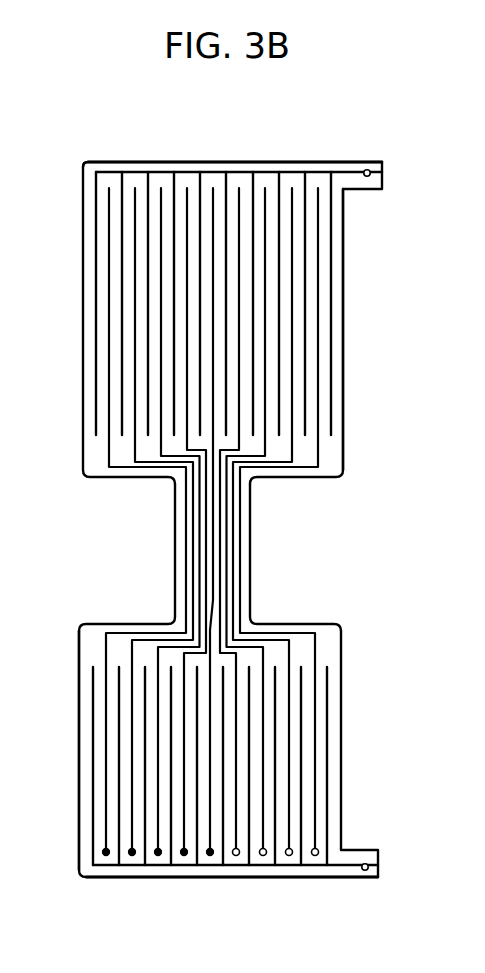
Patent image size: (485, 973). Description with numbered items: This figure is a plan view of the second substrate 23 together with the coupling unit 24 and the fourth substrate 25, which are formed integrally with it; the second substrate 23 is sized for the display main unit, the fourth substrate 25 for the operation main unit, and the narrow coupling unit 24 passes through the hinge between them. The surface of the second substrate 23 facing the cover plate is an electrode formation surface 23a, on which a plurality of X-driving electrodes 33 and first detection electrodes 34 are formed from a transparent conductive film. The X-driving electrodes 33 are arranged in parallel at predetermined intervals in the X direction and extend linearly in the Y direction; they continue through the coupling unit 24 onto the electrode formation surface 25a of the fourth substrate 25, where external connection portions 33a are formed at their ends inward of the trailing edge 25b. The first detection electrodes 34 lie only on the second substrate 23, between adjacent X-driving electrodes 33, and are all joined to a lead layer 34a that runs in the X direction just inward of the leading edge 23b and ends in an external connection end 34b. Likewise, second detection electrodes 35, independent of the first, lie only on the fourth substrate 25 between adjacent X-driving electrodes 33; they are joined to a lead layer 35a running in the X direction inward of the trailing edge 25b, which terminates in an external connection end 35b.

The second substrate 23 is at (60, 477).
The electrode formation surface 23a is at (344, 253).
The leading edge 23b is at (222, 161).
The coupling unit 24 is at (60, 477).
The fourth substrate 25 is at (60, 626).
The electrode formation surface 25a is at (82, 672).
The trailing edge 25b is at (302, 879).
The X-driving electrodes 33 is at (293, 382).
The external connection portions 33a is at (183, 856).
The first detection electrodes 34 is at (114, 187).
The lead layer 34a is at (137, 171).
The external connection end 34b is at (366, 169).
The second detection electrodes 35 is at (327, 760).
The lead layer 35a is at (232, 879).
The external connection end 35b is at (366, 871).